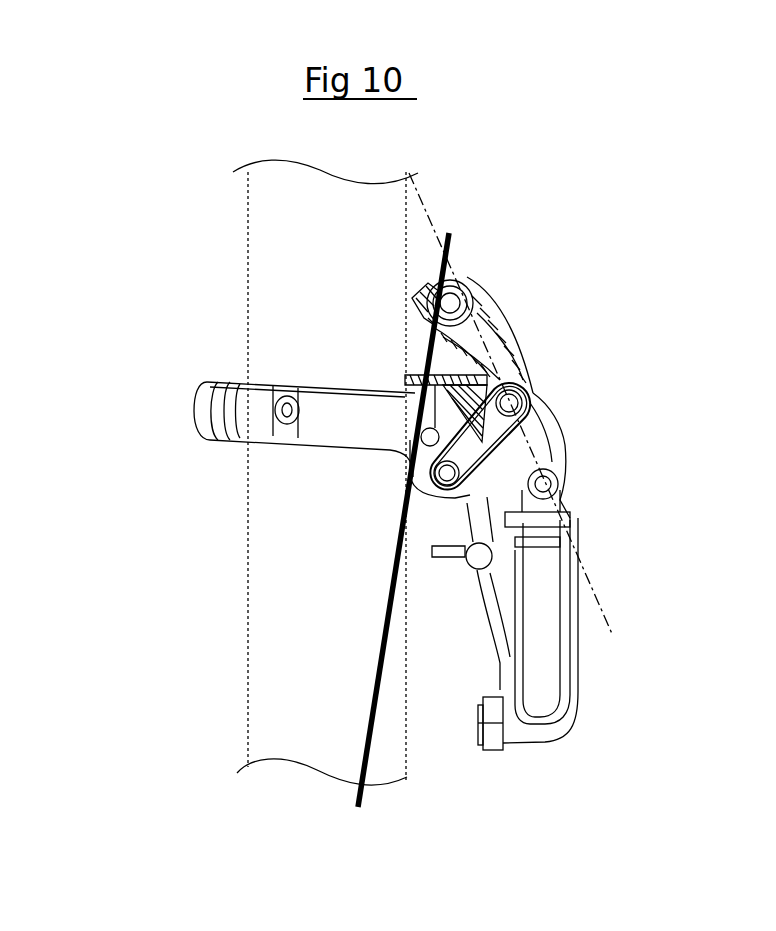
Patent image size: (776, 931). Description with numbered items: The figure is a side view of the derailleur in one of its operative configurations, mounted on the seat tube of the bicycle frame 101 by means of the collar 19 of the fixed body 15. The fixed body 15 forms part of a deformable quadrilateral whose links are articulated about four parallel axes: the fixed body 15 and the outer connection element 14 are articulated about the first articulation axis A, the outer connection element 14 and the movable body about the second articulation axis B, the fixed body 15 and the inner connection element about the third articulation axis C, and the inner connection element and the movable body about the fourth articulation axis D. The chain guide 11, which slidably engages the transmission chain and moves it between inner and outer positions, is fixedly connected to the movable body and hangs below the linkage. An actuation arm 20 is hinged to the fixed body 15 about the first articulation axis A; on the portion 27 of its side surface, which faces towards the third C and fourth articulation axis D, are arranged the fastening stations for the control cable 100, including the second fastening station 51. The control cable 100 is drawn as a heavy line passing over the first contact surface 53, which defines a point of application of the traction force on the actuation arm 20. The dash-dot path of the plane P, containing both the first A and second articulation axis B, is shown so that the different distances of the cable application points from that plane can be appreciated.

The chain guide 11 is at (578, 690).
The outer connection element 14 is at (565, 442).
The fixed body 15 is at (443, 410).
The collar 19 is at (323, 417).
The actuation arm 20 is at (506, 338).
The portion of the side surface 27 is at (440, 350).
The second fastening station 51 is at (420, 295).
The first contact surface 53 is at (425, 320).
The control cable 100 is at (367, 728).
The frame 101 is at (263, 652).
The first articulation axis A is at (523, 402).
The second articulation axis B is at (549, 483).
The third articulation axis C is at (413, 493).
The fourth articulation axis D is at (478, 560).
The plane P is at (600, 600).